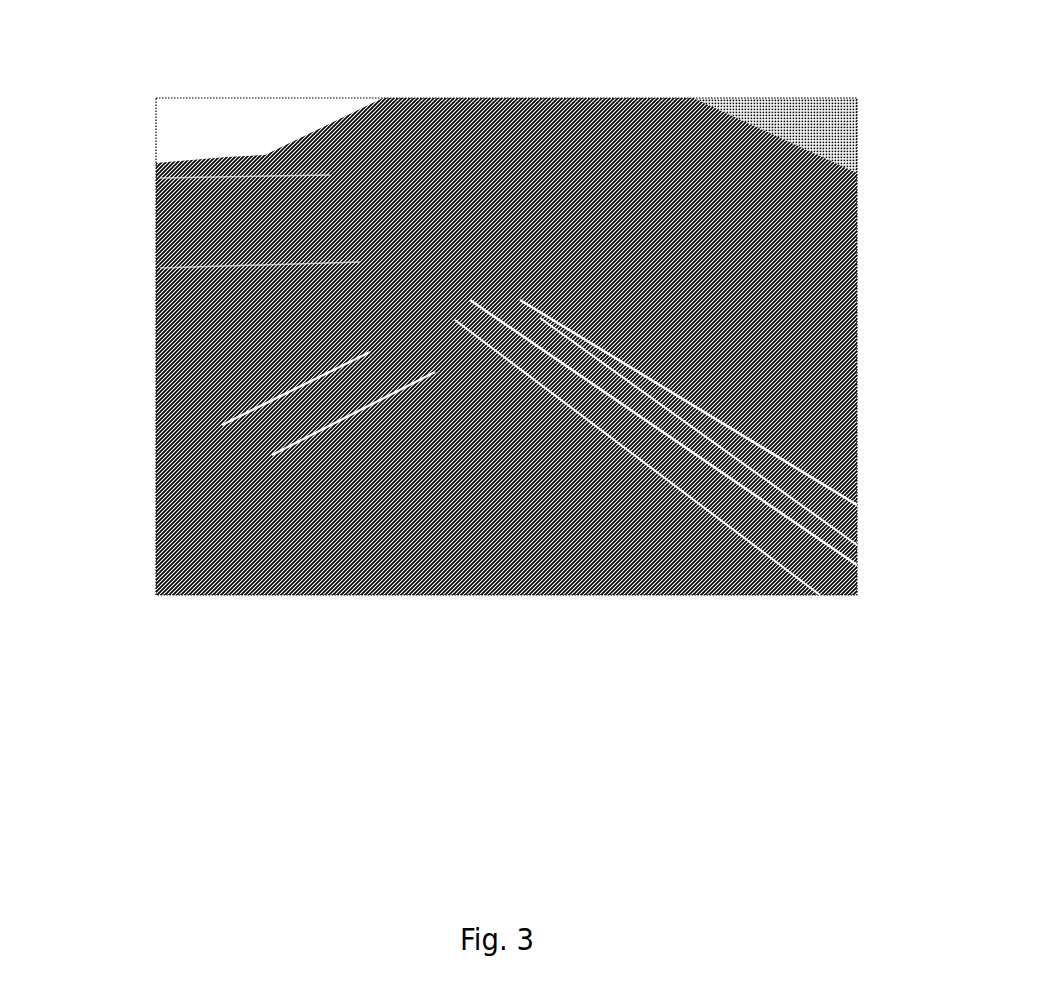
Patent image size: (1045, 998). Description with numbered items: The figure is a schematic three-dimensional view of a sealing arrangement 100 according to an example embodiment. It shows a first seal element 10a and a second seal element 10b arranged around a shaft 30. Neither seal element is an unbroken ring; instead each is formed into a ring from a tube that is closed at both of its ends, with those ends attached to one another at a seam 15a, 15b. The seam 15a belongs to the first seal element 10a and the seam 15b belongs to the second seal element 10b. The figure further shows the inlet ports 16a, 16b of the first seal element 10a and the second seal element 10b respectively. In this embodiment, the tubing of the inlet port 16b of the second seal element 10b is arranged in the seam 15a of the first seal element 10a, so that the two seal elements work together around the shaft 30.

The camera image of track area 100 is at (214, 70).
The shaft 30 is at (593, 126).
The first seal element 10a is at (286, 268).
The second seal element 10b is at (270, 176).
The seam 15a is at (463, 361).
The seam 15b is at (644, 314).
The inlet port 16a is at (218, 407).
The inlet port 16b is at (362, 431).